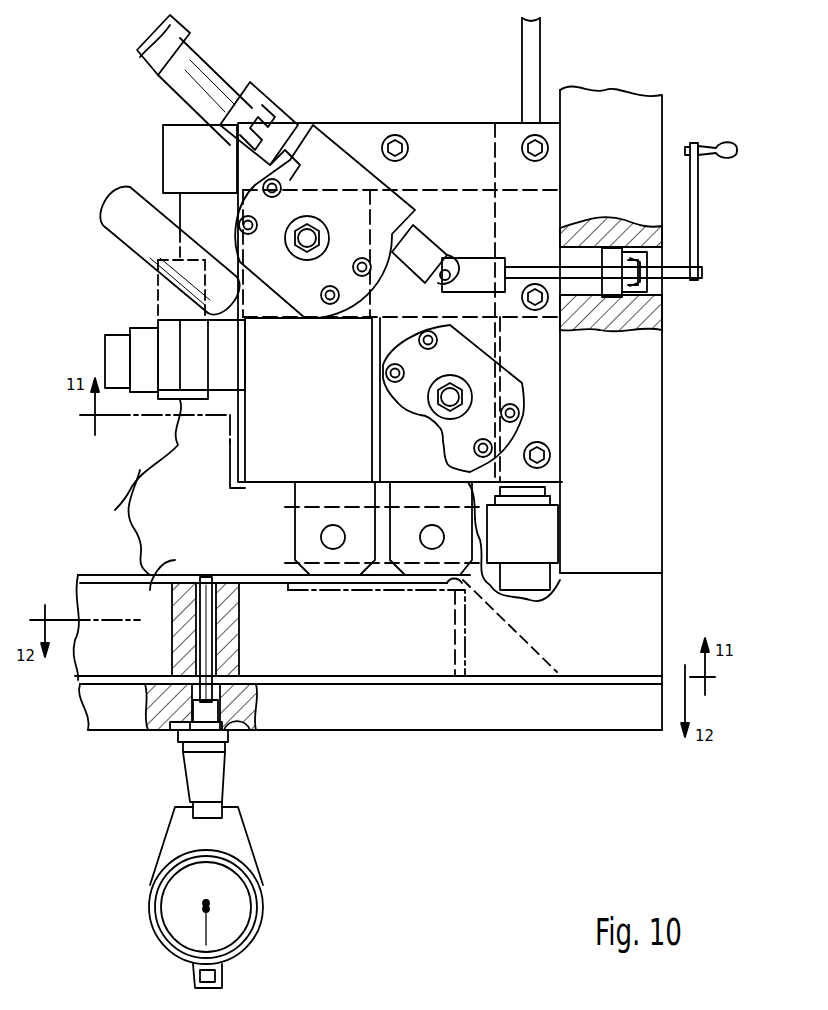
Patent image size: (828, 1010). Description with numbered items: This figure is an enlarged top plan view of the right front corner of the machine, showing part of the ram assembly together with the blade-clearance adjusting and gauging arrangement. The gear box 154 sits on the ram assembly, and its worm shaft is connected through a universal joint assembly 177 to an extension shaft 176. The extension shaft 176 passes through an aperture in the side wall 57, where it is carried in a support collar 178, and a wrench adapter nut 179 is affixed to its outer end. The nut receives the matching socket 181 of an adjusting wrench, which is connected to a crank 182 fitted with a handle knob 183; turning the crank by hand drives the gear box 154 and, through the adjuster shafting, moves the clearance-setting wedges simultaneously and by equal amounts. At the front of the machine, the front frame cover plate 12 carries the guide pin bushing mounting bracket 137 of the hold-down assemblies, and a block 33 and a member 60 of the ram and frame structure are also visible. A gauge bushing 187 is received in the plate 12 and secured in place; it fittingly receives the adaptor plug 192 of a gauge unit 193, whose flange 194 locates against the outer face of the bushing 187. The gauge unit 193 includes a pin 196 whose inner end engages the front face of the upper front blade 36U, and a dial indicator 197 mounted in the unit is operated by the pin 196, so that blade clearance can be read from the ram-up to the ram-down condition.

The gear box 154 is at (340, 155).
The universal joint assembly 177 is at (462, 235).
The extension shaft 176 is at (573, 270).
The support collar 178 is at (610, 292).
The wrench adapter nut 179 is at (633, 278).
The socket 181 is at (643, 267).
The crank 182 is at (698, 210).
The handle knob 183 is at (737, 150).
The side wall 57 is at (645, 400).
The block 33 is at (320, 406).
The upper front blade 36U is at (140, 575).
The guide pin bushing mounting bracket 137 is at (100, 580).
The pin 196 is at (205, 632).
The block 60 is at (372, 651).
The front frame cover plate 12 is at (500, 722).
The adaptor plug 192 is at (200, 720).
The flange 194 is at (245, 705).
The gauge bushing 187 is at (236, 740).
The gauge unit 193 is at (260, 812).
The dial indicator 197 is at (240, 905).